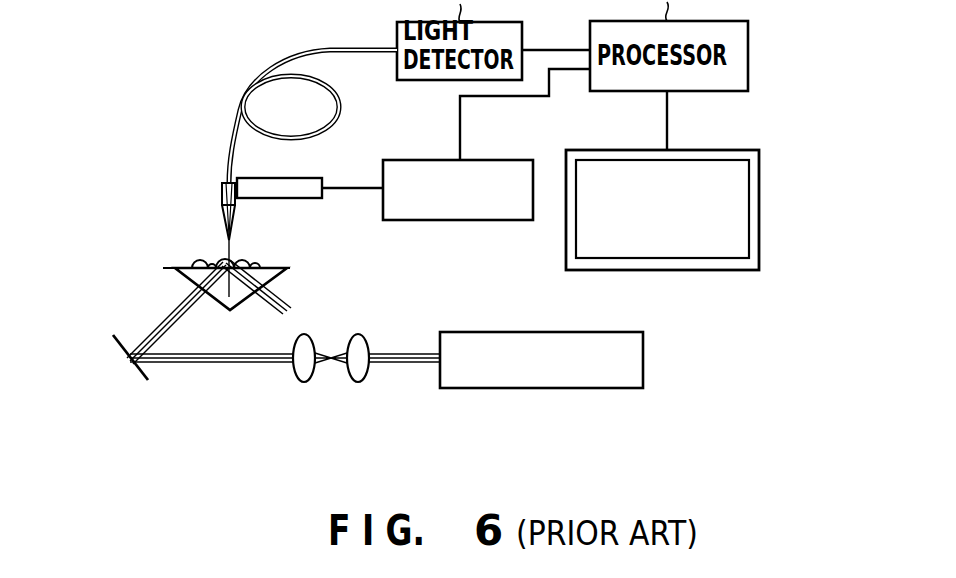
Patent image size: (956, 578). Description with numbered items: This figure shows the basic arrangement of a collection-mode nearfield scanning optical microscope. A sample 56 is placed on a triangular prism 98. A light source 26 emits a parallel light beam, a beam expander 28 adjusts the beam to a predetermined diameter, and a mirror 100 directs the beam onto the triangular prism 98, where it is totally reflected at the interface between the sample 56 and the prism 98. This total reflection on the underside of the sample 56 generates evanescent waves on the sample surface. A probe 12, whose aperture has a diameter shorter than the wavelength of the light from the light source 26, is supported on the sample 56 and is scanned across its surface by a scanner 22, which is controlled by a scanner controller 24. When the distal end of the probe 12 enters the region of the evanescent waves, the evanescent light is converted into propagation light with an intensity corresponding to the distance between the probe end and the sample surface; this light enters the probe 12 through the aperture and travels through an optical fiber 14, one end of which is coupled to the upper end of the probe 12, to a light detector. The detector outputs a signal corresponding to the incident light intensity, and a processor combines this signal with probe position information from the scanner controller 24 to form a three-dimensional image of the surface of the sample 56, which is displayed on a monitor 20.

The probe 12 is at (240, 214).
The optical fiber 14 is at (286, 48).
The monitor 20 is at (760, 207).
The scanner 22 is at (324, 178).
The scanner controller 24 is at (496, 160).
The light source 26 is at (645, 360).
The beam expander 28 is at (377, 386).
The sample 56 is at (207, 258).
The triangular prism 98 is at (178, 273).
The mirror 100 is at (122, 357).